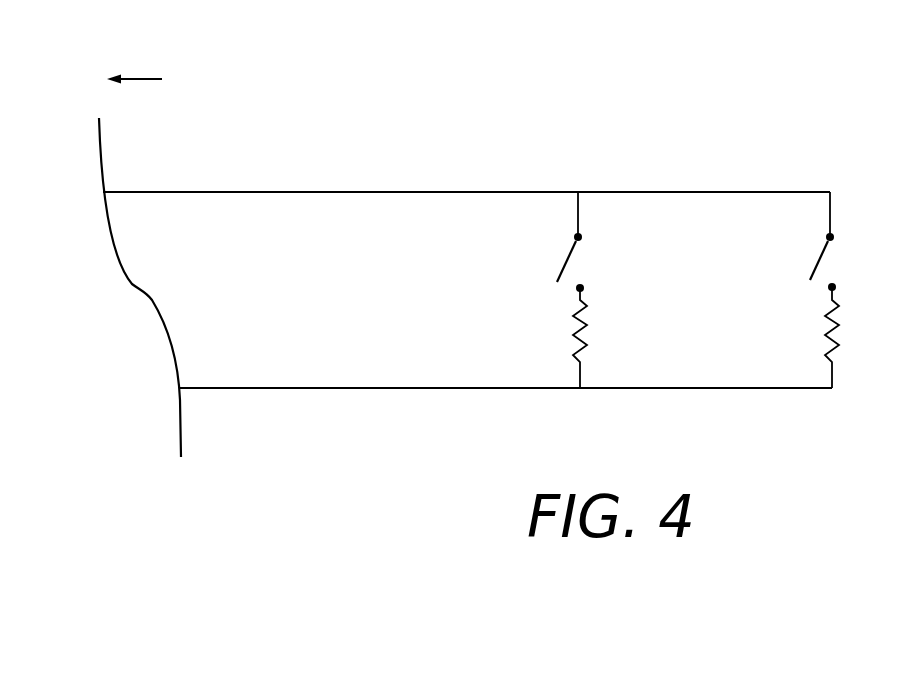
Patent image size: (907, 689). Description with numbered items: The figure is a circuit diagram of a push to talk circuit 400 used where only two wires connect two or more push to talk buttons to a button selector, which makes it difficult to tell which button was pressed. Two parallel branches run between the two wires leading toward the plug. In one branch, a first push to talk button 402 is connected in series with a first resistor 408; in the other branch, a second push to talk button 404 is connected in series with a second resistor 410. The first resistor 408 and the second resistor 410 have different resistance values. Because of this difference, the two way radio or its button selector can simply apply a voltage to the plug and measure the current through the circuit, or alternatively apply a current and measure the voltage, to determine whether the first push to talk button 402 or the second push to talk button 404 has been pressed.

The push to talk circuit 400 is at (426, 131).
The first push to talk button 402 is at (601, 264).
The second push to talk button 404 is at (844, 262).
The first resistor 408 is at (604, 329).
The second resistor 410 is at (855, 328).